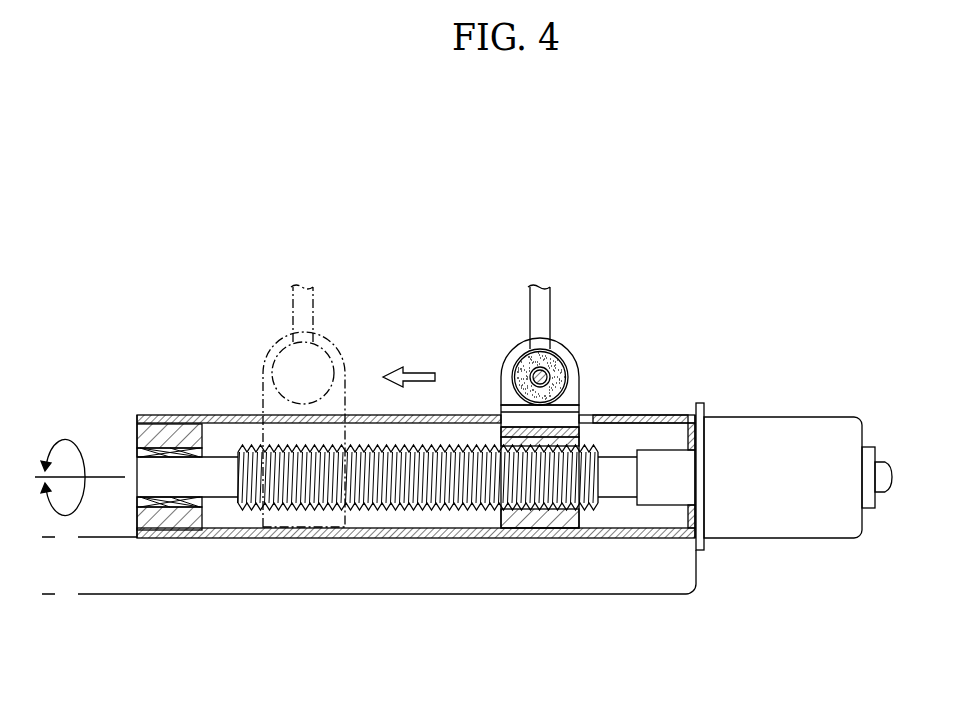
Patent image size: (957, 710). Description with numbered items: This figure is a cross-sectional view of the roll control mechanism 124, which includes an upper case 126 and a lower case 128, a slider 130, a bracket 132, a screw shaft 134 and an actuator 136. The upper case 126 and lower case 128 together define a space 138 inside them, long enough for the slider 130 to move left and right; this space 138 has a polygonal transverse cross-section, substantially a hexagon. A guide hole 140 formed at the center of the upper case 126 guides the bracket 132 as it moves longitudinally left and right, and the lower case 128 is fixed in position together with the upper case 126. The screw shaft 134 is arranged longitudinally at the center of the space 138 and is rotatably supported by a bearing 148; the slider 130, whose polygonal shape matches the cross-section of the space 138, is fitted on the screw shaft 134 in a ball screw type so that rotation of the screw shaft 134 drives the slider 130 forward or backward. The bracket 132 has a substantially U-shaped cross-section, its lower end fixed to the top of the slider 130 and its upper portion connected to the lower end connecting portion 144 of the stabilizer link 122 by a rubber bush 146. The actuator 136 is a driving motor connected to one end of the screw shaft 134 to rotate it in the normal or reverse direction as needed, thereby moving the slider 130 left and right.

The stabilizer link 122 is at (545, 306).
The roll control mechanism 124 is at (676, 366).
The upper case 126 is at (165, 416).
The lower case 128 is at (197, 540).
The slider 130 is at (538, 512).
The bracket 132 is at (572, 399).
The screw shaft 134 is at (373, 505).
The actuator 136 is at (768, 500).
The space 138 is at (427, 520).
The guide hole 140 is at (357, 415).
The lower end connecting portion 144 is at (563, 352).
The rubber bush 146 is at (558, 378).
The bearing 148 is at (148, 437).